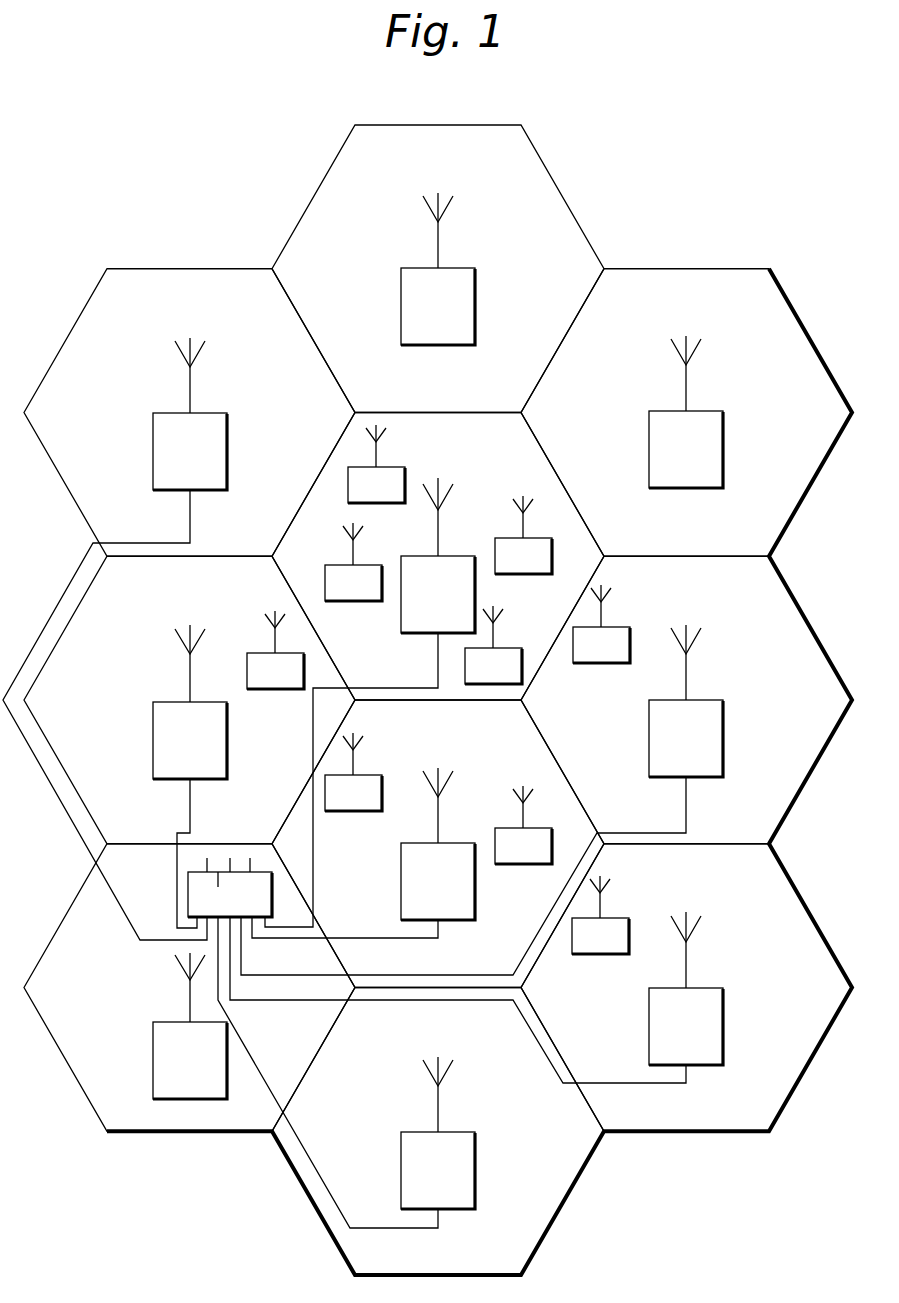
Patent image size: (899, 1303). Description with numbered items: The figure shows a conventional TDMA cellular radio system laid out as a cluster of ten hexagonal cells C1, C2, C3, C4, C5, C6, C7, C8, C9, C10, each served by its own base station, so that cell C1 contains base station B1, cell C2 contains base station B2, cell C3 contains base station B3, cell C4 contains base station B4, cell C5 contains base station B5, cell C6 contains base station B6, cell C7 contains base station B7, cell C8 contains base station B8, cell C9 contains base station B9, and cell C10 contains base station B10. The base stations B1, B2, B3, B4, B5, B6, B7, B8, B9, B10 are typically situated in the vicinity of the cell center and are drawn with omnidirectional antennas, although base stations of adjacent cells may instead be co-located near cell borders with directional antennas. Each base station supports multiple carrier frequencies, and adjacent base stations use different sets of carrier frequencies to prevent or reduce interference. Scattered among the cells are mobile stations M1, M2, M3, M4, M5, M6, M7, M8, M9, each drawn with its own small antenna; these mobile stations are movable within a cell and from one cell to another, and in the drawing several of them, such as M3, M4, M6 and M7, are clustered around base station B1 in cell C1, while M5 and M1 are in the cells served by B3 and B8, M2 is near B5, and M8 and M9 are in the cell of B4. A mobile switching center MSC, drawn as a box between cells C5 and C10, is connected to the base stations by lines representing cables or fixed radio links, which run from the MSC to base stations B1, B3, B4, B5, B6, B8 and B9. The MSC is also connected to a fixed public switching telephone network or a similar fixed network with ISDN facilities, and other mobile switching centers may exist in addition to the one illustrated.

The base station B1 is at (370, 702).
The base station B2 is at (686, 412).
The base station B3 is at (482, 800).
The base station B4 is at (363, 853).
The base station B5 is at (190, 776).
The base station B6 is at (115, 639).
The base station B7 is at (438, 269).
The base station B8 is at (476, 997).
The base station B9 is at (346, 1072).
The base station B10 is at (190, 1026).
The mobile station M1 is at (600, 915).
The mobile station M2 is at (275, 650).
The mobile station M3 is at (353, 562).
The mobile station M4 is at (523, 535).
The mobile station M5 is at (601, 624).
The mobile station M6 is at (376, 464).
The mobile station M7 is at (493, 645).
The mobile station M8 is at (523, 825).
The mobile station M9 is at (353, 772).
The cell C1 is at (375, 682).
The cell C2 is at (629, 540).
The cell C3 is at (629, 828).
The cell C4 is at (379, 968).
The cell C5 is at (133, 830).
The cell C6 is at (135, 542).
The cell C7 is at (382, 400).
The cell C8 is at (630, 1117).
The cell C9 is at (380, 1262).
The cell C10 is at (139, 1122).
The mobile switching center MSC is at (230, 887).